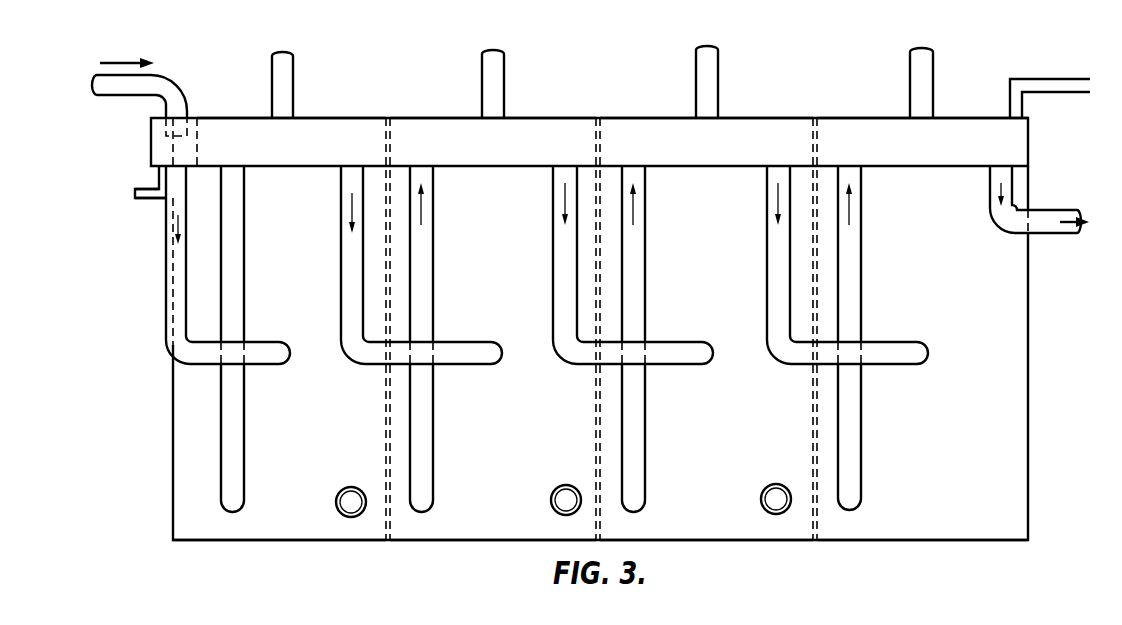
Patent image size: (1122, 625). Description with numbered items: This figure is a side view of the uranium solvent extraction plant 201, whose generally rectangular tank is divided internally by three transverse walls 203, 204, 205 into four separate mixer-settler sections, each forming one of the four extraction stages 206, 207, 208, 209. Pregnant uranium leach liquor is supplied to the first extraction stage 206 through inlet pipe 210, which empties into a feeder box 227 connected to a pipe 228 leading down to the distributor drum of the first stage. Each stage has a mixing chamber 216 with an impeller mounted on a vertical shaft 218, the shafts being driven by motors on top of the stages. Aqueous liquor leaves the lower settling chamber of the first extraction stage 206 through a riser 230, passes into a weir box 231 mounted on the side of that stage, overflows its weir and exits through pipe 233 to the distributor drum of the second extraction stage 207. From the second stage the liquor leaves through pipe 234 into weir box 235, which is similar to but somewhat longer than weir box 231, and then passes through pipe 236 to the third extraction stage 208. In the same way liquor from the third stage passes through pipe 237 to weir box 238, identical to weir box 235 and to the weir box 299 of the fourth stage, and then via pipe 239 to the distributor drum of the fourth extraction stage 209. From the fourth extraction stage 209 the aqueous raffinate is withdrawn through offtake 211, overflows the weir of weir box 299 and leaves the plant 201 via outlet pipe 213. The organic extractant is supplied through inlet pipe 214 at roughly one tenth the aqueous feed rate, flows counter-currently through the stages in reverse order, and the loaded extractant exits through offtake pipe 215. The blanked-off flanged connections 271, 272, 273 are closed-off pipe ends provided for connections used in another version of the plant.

The uranium solvent extraction plant 201 is at (166, 418).
The transverse wall 203 is at (387, 407).
The transverse wall 204 is at (598, 405).
The transverse wall 205 is at (813, 445).
The first extraction stage 206 is at (262, 506).
The second extraction stage 207 is at (487, 527).
The third extraction stage 208 is at (676, 525).
The fourth extraction stage 209 is at (972, 503).
The inlet pipe 210 is at (162, 85).
The offtake 211 is at (851, 452).
The outlet pipe 213 is at (1053, 216).
The inlet pipe 214 is at (1027, 81).
The offtake pipe 215 is at (147, 195).
The mixing chamber 216 is at (297, 330).
The vertical shaft 218 is at (291, 77).
The feeder box 227 is at (160, 150).
The pipe 228 is at (170, 293).
The riser 230 is at (233, 457).
The weir box 231 is at (337, 130).
The pipe 233 is at (350, 296).
The pipe 234 is at (420, 280).
The weir box 235 is at (442, 128).
The pipe 236 is at (563, 292).
The pipe 237 is at (634, 280).
The weir box 238 is at (645, 128).
The pipe 239 is at (776, 295).
The weir box 299 is at (857, 128).
The blanked off flanged connection 271 is at (334, 503).
The drain opening 272 is at (550, 501).
The blanked off flanged connection 273 is at (760, 500).